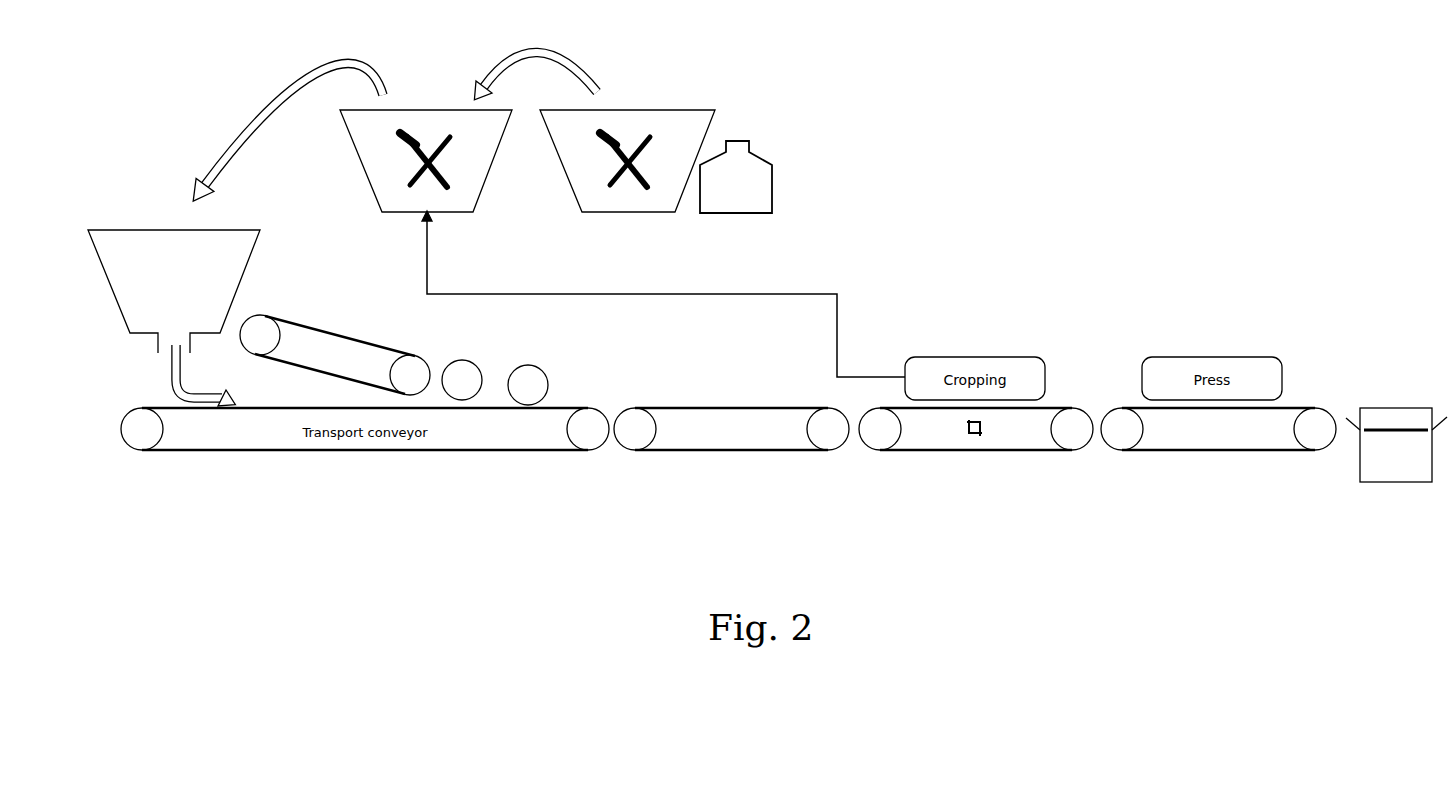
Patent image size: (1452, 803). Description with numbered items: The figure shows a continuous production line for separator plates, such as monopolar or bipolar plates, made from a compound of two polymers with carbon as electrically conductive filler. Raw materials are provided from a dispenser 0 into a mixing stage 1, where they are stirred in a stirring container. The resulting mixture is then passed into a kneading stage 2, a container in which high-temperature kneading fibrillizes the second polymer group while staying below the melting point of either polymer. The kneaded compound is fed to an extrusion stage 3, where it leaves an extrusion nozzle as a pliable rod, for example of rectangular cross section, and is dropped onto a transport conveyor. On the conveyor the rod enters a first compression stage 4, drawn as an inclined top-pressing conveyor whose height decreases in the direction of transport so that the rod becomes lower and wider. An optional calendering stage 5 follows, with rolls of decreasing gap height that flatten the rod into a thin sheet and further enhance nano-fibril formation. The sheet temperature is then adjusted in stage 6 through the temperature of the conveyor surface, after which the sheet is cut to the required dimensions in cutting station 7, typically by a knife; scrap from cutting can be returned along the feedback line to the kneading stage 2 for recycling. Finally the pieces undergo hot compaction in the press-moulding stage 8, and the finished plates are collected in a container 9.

The dispenser 0 is at (736, 177).
The mixing stage 1 is at (627, 138).
The kneading stage 2 is at (426, 137).
The extrusion stage 3 is at (174, 318).
The first compression stage 4 is at (335, 355).
The calendering stage 5 is at (495, 379).
The temperature adjustment stage 6 is at (731, 444).
The cutting station 7 is at (976, 442).
The press-moulding stage 8 is at (1218, 443).
The container 9 is at (1396, 445).